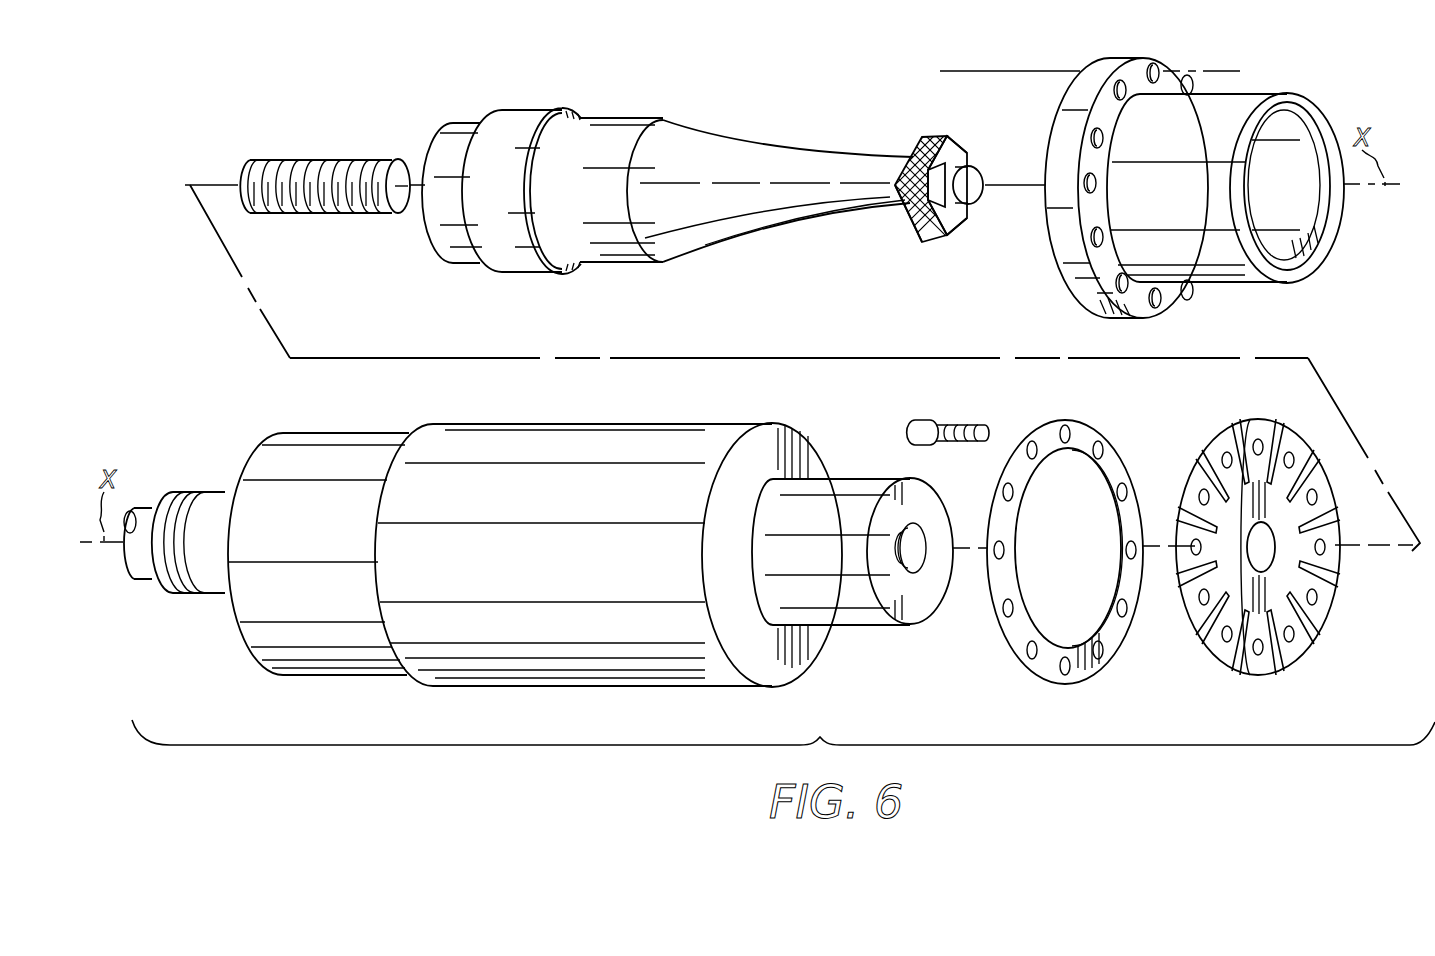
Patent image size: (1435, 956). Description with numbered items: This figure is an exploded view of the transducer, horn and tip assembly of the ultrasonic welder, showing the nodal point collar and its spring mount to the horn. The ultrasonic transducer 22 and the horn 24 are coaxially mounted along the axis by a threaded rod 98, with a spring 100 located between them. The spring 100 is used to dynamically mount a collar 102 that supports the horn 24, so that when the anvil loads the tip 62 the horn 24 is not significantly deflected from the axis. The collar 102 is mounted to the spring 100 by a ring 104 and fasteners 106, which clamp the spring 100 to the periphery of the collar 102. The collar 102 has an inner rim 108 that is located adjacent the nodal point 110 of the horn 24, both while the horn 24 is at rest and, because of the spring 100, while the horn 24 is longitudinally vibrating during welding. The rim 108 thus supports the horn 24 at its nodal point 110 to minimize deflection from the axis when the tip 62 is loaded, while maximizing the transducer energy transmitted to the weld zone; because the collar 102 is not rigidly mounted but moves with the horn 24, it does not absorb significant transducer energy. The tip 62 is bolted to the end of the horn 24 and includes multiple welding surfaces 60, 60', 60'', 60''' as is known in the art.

The ultrasonic transducer 22 is at (585, 545).
The horn 24 is at (586, 199).
The welding surface 60 is at (913, 175).
The welding surface 60' is at (894, 230).
The welding surface 60'' is at (990, 236).
The welding surface 60''' is at (983, 123).
The tip 62 is at (942, 246).
The threaded rod 98 is at (323, 158).
The spring 100 is at (1305, 632).
The collar 102 is at (1232, 107).
The ring 104 is at (1050, 430).
The fasteners 106 is at (908, 426).
The inner rim 108 is at (1316, 234).
The nodal point 110 is at (673, 118).